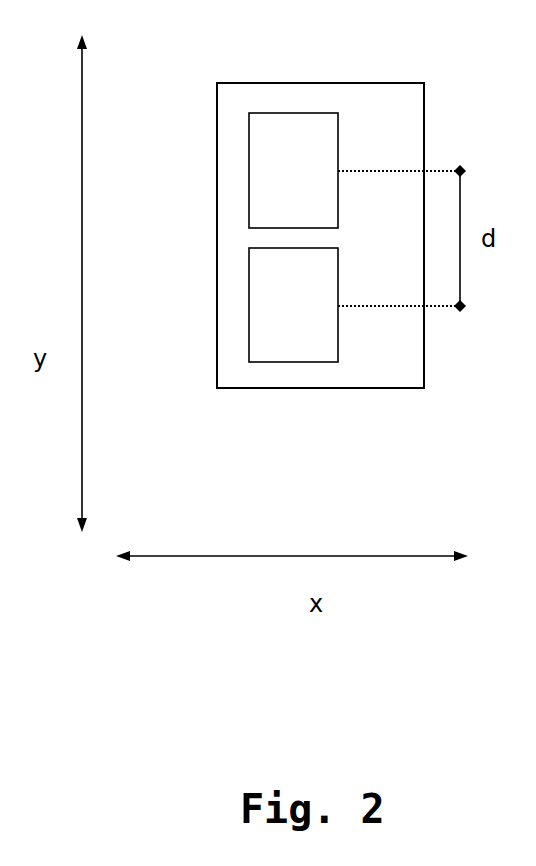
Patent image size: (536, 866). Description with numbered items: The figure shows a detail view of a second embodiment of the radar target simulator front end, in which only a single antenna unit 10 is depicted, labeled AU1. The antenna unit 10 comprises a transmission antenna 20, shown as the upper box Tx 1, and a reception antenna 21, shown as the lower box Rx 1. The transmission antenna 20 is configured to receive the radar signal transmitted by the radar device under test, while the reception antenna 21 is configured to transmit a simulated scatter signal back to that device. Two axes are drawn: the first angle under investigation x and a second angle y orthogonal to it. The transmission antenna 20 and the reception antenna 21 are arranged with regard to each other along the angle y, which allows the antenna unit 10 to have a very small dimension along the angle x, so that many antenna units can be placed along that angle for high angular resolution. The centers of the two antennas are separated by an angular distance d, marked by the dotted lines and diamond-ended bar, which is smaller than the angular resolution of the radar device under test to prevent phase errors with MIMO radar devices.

The antenna unit 10 is at (217, 249).
The transmission antenna 20 is at (294, 113).
The reception antenna 21 is at (278, 363).